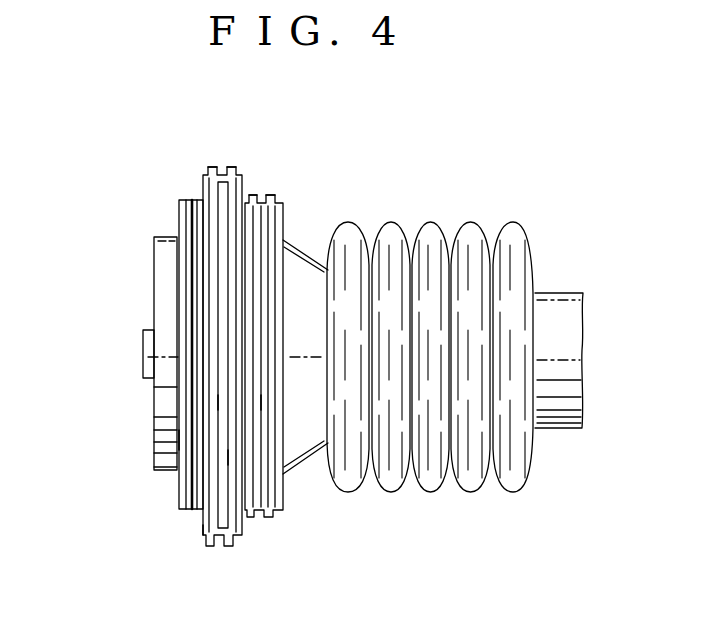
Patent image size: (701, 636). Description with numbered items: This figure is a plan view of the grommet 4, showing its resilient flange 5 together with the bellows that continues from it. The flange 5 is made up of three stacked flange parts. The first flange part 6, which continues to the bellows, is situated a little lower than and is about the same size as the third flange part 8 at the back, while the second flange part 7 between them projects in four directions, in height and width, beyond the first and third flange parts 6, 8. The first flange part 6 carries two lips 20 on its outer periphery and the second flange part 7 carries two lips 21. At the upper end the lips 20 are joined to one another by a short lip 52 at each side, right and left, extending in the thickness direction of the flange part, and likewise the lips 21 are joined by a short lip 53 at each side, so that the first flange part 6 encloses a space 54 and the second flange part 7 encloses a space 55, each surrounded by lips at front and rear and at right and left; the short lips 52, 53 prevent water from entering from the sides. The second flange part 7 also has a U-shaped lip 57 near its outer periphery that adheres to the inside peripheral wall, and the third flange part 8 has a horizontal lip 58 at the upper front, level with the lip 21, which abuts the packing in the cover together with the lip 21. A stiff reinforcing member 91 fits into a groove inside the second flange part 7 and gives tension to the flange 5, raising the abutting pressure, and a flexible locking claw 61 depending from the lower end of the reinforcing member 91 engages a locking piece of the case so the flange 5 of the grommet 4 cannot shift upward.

The grommet 4 is at (429, 212).
The resilient flange 5 is at (101, 87).
The first flange part 6 is at (306, 316).
The second flange part 7 is at (192, 333).
The third flange part 8 is at (133, 301).
The lip 20 is at (253, 270).
The lip 21 is at (228, 458).
The short lip 52 is at (263, 204).
The short lip 53 is at (228, 175).
The space 54 is at (263, 402).
The space 55 is at (217, 402).
The lip 57 is at (203, 533).
The horizontal lip 58 is at (182, 440).
The locking claw 61 is at (148, 357).
The reinforcing member 91 is at (155, 280).